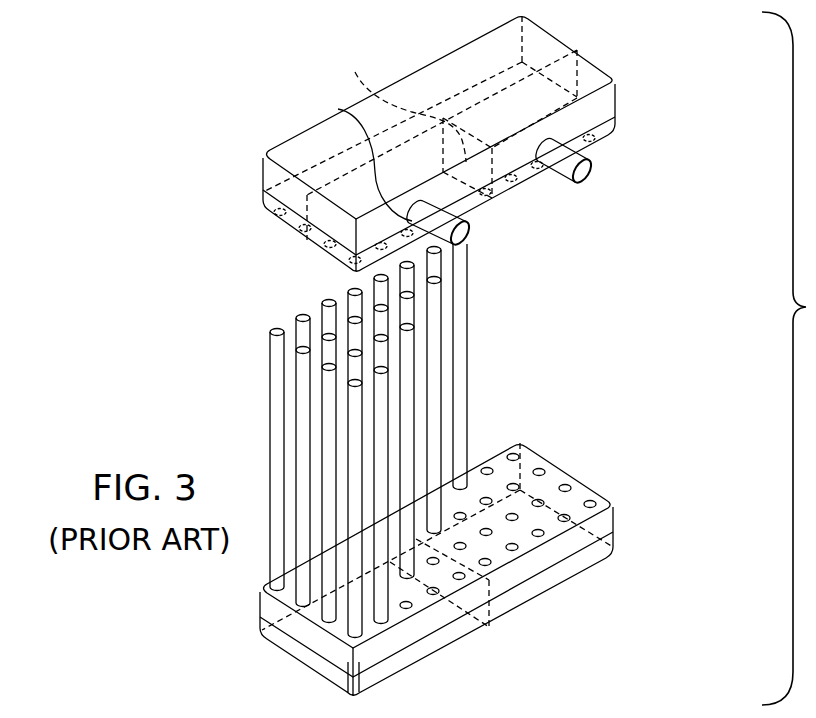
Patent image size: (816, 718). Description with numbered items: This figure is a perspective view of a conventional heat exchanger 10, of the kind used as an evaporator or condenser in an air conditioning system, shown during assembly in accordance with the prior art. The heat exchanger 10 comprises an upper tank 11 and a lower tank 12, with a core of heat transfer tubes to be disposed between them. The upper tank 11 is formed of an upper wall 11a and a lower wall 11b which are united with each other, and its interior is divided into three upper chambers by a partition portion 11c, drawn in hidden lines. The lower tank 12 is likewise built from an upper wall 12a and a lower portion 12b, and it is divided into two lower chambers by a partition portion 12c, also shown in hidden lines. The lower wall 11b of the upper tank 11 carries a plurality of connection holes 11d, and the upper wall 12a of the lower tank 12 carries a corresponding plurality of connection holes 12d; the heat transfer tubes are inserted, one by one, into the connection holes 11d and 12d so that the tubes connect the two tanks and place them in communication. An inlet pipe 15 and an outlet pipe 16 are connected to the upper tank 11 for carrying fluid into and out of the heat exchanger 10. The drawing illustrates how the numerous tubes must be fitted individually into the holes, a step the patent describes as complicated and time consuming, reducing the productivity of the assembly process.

The heat exchanger 10 is at (212, 386).
The upper tank 11 is at (601, 55).
The upper wall 11a is at (617, 90).
The lower wall 11b is at (617, 120).
The partition portion 11c is at (356, 73).
The connection holes 11d is at (494, 198).
The lower tank 12 is at (620, 495).
The upper wall 12a is at (617, 512).
The base block bottom plate 12b is at (617, 538).
The partition portion 12c is at (469, 613).
The connection holes 12d is at (566, 485).
The inlet pipe 15 is at (338, 109).
The outlet pipe 16 is at (602, 168).